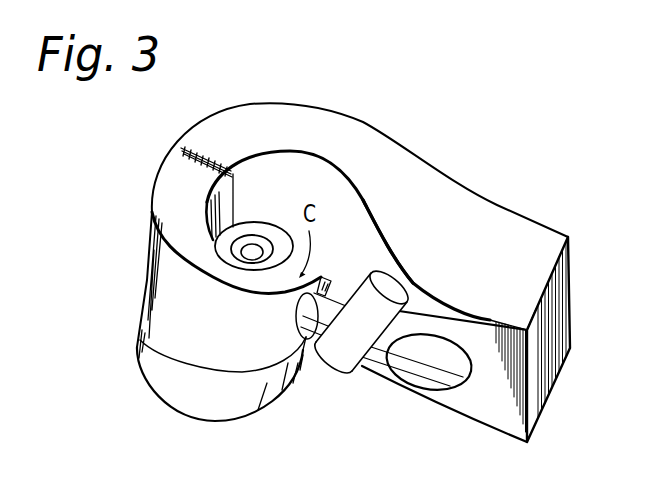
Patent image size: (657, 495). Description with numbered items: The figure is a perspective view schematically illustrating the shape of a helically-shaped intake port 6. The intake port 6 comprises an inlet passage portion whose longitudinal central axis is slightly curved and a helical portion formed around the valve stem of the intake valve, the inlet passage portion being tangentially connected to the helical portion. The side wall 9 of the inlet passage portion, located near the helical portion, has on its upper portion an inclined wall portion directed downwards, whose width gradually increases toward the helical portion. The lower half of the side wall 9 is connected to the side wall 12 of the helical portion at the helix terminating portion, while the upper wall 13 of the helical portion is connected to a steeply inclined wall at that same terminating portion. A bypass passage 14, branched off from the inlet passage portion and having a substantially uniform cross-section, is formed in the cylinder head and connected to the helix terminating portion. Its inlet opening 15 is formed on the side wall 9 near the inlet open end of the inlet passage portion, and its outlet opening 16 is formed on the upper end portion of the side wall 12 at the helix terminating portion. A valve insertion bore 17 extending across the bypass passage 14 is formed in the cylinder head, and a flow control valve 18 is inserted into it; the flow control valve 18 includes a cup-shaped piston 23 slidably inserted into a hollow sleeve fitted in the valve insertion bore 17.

The helically-shaped intake port 6 is at (520, 201).
The side wall 9 is at (482, 418).
The side wall of the helical portion 12 is at (160, 307).
The upper wall of the helical portion 13 is at (180, 247).
The bypass passage 14 is at (382, 370).
The inlet opening 15 is at (421, 390).
The outlet opening 16 is at (295, 313).
The valve insertion bore 17 is at (349, 366).
The flow control valve 18 is at (371, 262).
The cup-shaped piston 23 is at (380, 295).